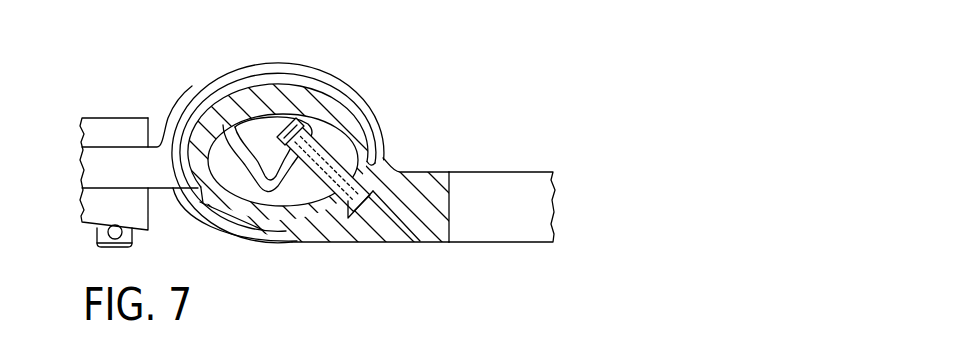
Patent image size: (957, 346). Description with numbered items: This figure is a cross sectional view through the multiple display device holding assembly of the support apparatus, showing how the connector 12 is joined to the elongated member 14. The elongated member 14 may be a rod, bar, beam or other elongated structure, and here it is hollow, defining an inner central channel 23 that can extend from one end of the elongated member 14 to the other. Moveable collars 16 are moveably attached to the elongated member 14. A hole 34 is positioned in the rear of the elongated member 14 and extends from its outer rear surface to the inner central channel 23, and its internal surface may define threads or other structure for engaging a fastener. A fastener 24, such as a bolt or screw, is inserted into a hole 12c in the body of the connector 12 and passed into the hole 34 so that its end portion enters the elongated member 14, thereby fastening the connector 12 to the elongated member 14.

The connector 12 is at (507, 175).
The holes in the connector 12c is at (395, 237).
The elongated member 14 is at (190, 98).
The moveable collars 16 is at (320, 68).
The inner central channel 23 is at (265, 128).
The fasteners 24 is at (383, 150).
The holes 34 is at (347, 143).